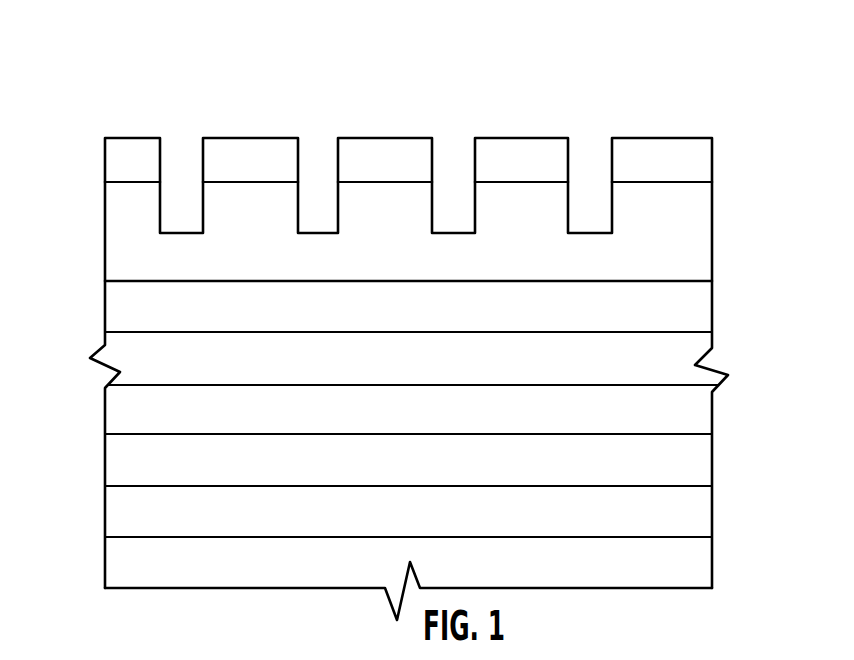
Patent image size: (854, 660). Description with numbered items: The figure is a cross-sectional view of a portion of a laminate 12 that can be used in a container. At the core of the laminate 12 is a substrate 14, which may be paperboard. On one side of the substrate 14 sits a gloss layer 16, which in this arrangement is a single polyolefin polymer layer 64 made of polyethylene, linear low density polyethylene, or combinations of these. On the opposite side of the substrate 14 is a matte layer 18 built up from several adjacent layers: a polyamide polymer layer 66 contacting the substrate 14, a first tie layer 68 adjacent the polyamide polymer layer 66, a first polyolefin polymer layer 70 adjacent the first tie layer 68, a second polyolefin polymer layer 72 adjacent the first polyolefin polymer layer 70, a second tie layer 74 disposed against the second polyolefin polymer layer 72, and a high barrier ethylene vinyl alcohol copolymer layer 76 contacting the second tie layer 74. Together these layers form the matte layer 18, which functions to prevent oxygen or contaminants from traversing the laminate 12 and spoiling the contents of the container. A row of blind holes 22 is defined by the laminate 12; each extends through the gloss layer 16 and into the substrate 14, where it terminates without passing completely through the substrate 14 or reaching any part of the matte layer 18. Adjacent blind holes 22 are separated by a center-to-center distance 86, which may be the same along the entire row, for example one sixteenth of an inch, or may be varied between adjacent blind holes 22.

The laminate 12 is at (489, 68).
The substrate 14 is at (722, 200).
The gloss layer 16 is at (722, 138).
The matte layer 18 is at (722, 282).
The blind holes 22 is at (192, 212).
The polyolefin polymer layer 64 is at (122, 158).
The polyamide polymer layer 66 is at (122, 300).
The first tie layer 68 is at (122, 354).
The first polyolefin polymer layer 70 is at (122, 410).
The second polyolefin polymer layer 72 is at (122, 460).
The second tie layer 74 is at (122, 510).
The high barrier ethylene vinyl alcohol copolymer layer 76 is at (122, 567).
The center-to-center distance 86 is at (589, 137).